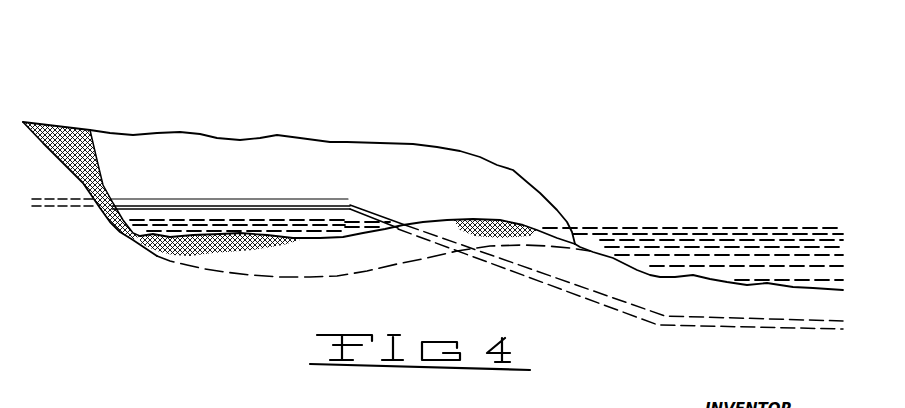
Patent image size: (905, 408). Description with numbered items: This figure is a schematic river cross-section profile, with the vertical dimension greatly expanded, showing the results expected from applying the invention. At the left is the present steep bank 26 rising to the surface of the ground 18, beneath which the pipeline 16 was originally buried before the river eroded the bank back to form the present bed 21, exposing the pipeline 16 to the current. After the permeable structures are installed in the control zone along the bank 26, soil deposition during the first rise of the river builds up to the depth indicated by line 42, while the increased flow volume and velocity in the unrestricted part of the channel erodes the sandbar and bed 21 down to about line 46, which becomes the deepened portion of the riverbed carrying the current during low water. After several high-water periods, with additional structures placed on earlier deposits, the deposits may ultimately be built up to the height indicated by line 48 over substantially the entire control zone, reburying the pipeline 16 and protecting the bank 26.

The pipeline 16 is at (211, 207).
The surface of the ground 18 is at (56, 92).
The present bed 21 is at (243, 284).
The present steep bank 26 is at (90, 130).
The line indicating depth of deposition 42 is at (346, 235).
The line of eroded bed / deepened portion of riverbed 46 is at (733, 281).
The line indicating ultimate deposit height 48 is at (462, 150).